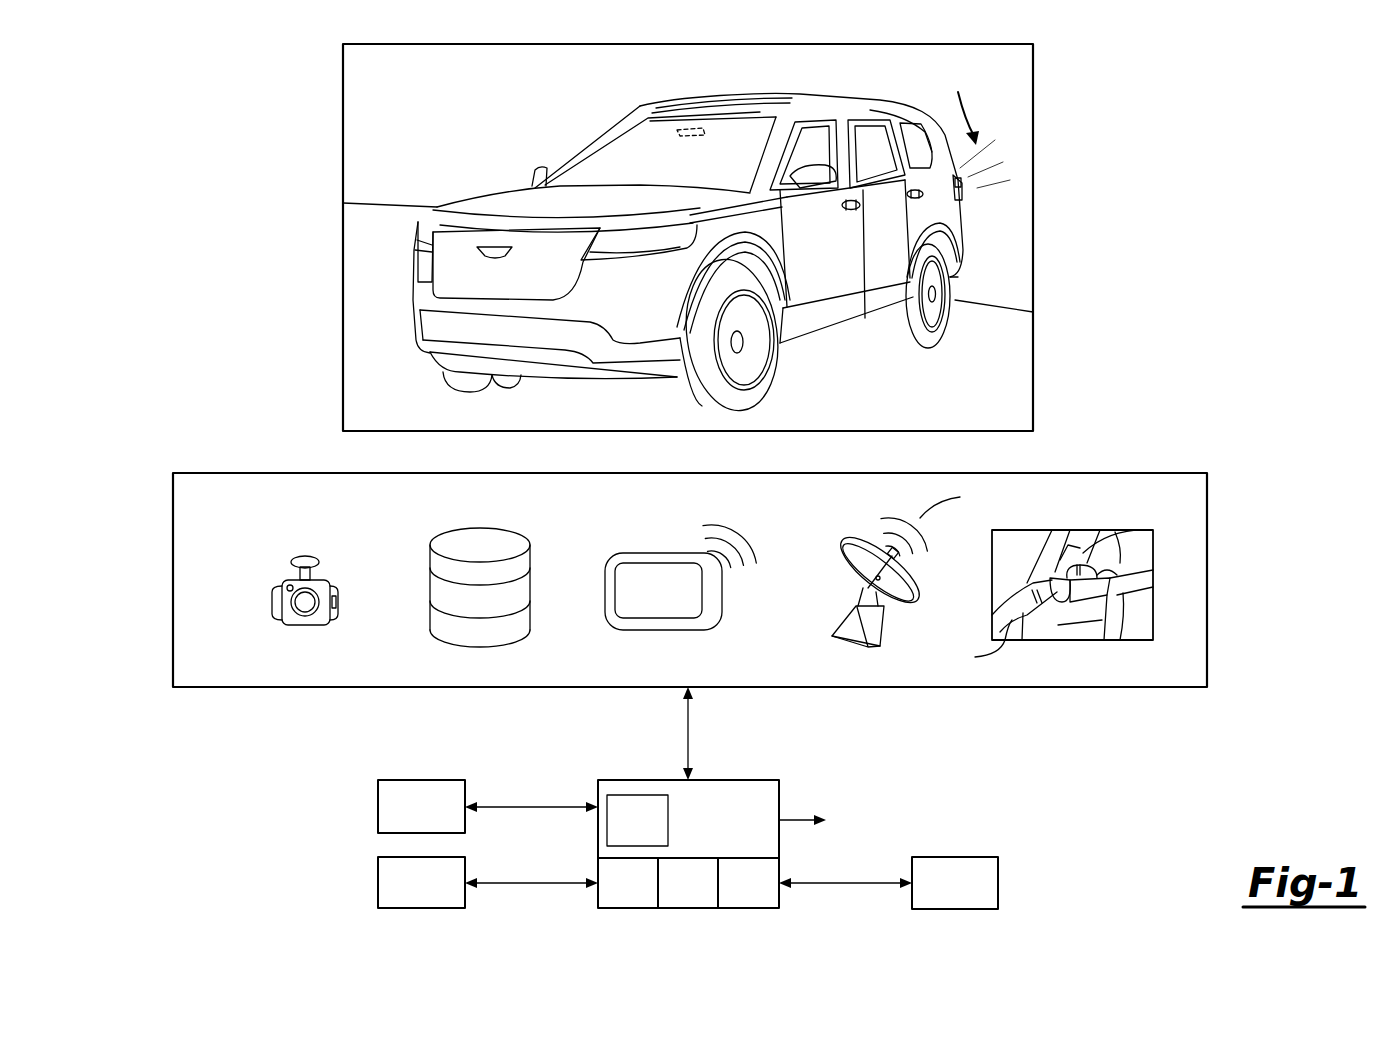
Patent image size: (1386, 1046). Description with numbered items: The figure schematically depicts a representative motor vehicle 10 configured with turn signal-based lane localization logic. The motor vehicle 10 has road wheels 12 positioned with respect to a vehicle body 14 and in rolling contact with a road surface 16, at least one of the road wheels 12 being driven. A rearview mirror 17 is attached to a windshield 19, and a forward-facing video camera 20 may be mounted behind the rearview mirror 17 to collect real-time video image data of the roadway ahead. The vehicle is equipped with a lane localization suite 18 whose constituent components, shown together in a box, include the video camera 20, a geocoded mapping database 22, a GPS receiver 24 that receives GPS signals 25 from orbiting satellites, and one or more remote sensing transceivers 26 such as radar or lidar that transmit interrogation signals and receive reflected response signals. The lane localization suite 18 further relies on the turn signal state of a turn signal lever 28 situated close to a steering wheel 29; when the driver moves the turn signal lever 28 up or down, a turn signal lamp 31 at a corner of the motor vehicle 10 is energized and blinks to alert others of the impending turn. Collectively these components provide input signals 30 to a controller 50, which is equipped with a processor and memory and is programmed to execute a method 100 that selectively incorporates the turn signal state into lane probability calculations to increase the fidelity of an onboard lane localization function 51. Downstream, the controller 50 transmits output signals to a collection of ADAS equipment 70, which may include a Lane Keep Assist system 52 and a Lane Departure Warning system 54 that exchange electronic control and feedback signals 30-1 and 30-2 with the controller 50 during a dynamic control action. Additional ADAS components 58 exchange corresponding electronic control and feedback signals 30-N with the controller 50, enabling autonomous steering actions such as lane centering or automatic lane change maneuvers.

The motor vehicle 10 is at (1106, 139).
The road wheels 12 is at (773, 368).
The vehicle body 14 is at (812, 275).
The road surface 16 is at (995, 407).
The rearview mirror 17 is at (708, 127).
The lane localization suite 18 is at (1205, 473).
The windshield 19 is at (592, 155).
The video camera 20 is at (287, 536).
The geocoded mapping database 22 is at (435, 516).
The GPS receiver 24 is at (635, 530).
The GPS signals 25 is at (741, 546).
The remote sensing transceivers 26 is at (859, 520).
The turn signal lever 28 is at (1120, 572).
The steering wheel 29 is at (1067, 545).
The input signals 30 is at (690, 735).
The electronic control and feedback signals 30-1 is at (532, 806).
The electronic control and feedback signals 30-2 is at (532, 884).
The electronic control and feedback signals 30-N is at (847, 884).
The turn signal lamp 31 is at (962, 183).
The controller 50 is at (648, 844).
The lane localization function 51 is at (637, 820).
The Lane Keep Assist system 52 is at (378, 807).
The Lane Departure Warning system 54 is at (378, 883).
The additional ADAS components 58 is at (998, 883).
The ADAS equipment 70 is at (1004, 758).
The method 100 is at (748, 884).